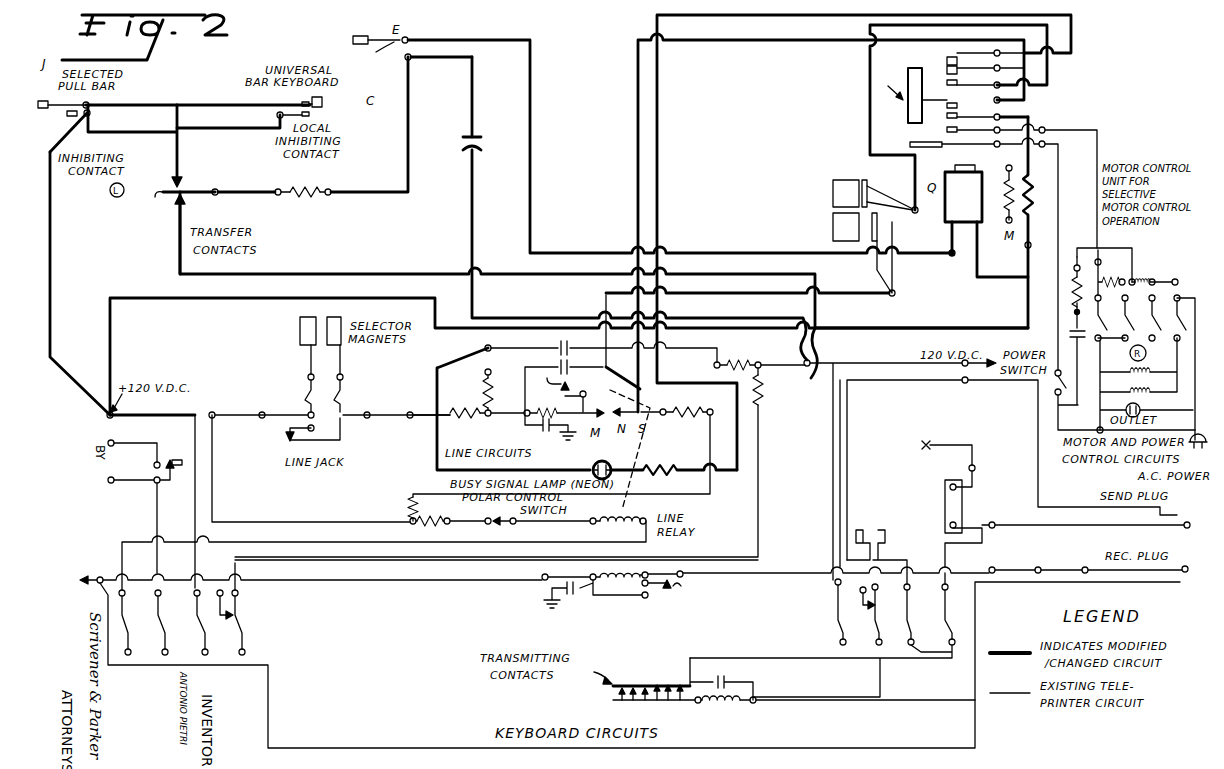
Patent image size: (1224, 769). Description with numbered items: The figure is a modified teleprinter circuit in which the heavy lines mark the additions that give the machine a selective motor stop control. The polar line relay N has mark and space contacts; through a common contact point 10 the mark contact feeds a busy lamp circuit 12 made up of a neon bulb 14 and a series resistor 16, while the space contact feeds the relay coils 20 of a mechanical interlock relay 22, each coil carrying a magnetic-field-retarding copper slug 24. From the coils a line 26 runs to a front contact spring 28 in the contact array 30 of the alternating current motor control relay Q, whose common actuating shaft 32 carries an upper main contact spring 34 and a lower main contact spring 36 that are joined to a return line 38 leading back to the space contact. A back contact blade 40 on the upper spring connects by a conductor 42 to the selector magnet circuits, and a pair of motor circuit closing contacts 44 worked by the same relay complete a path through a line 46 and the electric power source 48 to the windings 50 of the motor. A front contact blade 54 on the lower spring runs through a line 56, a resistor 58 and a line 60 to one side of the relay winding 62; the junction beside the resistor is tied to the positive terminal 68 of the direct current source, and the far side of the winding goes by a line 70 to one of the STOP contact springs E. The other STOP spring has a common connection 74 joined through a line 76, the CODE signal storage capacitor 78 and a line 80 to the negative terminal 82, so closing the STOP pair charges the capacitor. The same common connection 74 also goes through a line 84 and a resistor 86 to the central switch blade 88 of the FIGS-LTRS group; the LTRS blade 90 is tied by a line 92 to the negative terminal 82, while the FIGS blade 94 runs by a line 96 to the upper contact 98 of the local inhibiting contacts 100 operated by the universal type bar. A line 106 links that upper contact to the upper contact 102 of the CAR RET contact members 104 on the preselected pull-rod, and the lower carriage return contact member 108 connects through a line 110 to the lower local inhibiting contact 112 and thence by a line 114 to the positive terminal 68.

The common contact point 10 is at (607, 365).
The busy lamp circuit 12 is at (698, 494).
The neon bulb 14 is at (604, 461).
The series resistor 16 is at (680, 465).
The relay coils 20 is at (846, 210).
The mechanical interlock relay 22 is at (812, 236).
The copper slugs 24 is at (859, 176).
The line 26 is at (870, 99).
The front contact spring 28 is at (994, 88).
The contact array 30 is at (889, 83).
The common actuating shaft 32 is at (904, 123).
The upper main contact spring 34 is at (928, 69).
The lower main contact spring 36 is at (925, 102).
The return line 38 is at (750, 49).
The back contact blade 40 is at (993, 53).
The conductor 42 is at (817, 33).
The motor circuit closing contacts 44 is at (975, 133).
The line 46 is at (1097, 130).
The electric power source 48 is at (1192, 449).
The windings 50 is at (1152, 389).
The front contact blade 54 is at (1001, 116).
The line 56 is at (1033, 123).
The resistor 58 is at (1031, 203).
The line 60 is at (980, 262).
The winding 62 is at (963, 210).
The positive terminal 68 is at (98, 417).
The line 70 is at (533, 180).
The common connection 74 is at (411, 58).
The line 76 is at (474, 93).
The CODE signal storage capacitor 78 is at (472, 154).
The line 80 is at (478, 300).
The negative terminal 82 is at (805, 365).
The line 84 is at (410, 154).
The resistor 86 is at (274, 201).
The central switch blade 88 is at (155, 197).
The LTRS function contact blade 90 is at (166, 223).
The line 92 is at (329, 271).
The FIGS function contact blade 94 is at (182, 182).
The line 96 is at (179, 146).
The upper contact 98 is at (313, 100).
The local inhibiting contacts 100 is at (310, 114).
The upper contact 102 is at (60, 103).
The CAR RET contact members 104 is at (132, 118).
The line 106 is at (178, 104).
The lower carriage return contact member 108 is at (64, 118).
The line 110 is at (205, 126).
The lower local inhibiting contact 112 is at (282, 114).
The line 114 is at (52, 268).